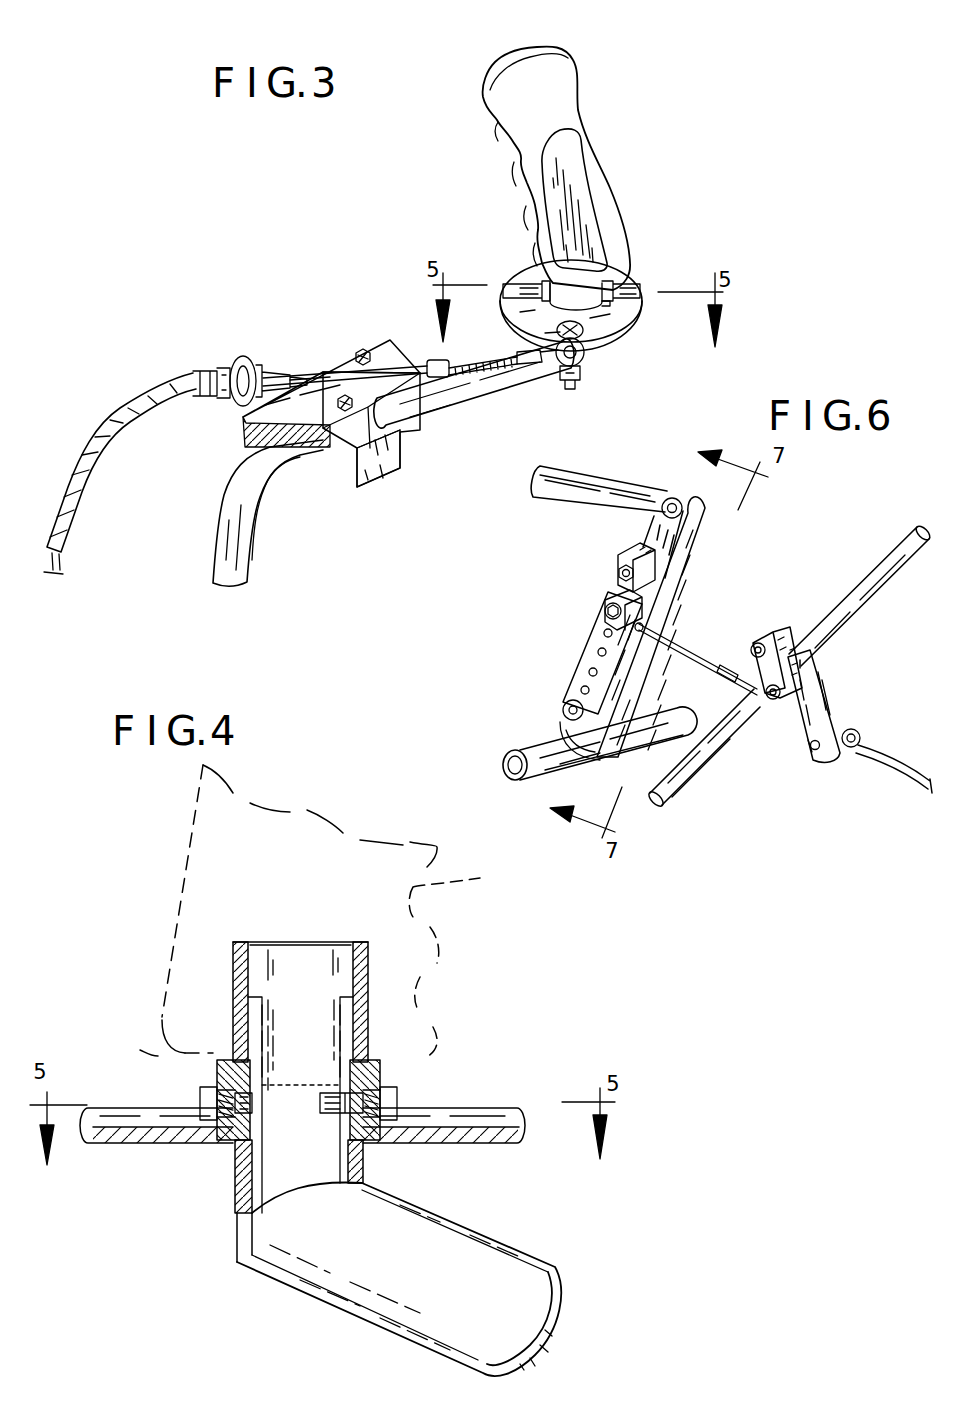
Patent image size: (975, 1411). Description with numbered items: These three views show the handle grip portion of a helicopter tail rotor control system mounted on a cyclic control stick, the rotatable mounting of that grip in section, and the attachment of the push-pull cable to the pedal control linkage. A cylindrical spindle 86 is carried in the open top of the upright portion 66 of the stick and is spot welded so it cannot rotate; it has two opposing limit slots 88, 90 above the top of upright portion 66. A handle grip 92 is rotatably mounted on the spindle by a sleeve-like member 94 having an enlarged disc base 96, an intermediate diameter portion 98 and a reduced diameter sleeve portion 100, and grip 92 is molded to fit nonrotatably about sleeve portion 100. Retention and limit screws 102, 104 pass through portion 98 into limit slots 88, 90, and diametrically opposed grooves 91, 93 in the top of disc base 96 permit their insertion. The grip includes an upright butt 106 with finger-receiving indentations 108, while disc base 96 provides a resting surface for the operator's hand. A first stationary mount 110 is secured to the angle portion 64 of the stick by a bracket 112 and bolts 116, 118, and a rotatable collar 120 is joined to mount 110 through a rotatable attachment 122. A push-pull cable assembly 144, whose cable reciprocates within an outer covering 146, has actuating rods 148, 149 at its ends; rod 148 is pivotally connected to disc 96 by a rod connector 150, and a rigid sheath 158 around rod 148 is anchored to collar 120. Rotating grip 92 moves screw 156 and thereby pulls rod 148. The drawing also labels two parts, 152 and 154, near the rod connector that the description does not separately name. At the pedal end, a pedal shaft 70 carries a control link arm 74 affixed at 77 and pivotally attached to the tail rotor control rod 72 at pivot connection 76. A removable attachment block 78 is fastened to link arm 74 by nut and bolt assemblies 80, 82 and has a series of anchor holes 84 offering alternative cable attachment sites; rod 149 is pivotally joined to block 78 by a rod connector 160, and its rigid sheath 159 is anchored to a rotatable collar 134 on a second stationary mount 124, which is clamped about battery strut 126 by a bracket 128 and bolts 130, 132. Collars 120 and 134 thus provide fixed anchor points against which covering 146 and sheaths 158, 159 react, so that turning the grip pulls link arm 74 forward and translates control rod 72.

In FIG. 3, the handle grip 92 is at (492, 60).
In FIG. 4, the handle grip 92 is at (333, 798).
In FIG. 3, the upright butt 106 is at (600, 175).
In FIG. 4, the upright butt 106 is at (277, 895).
In FIG. 3, the finger-receiving indentations 108 is at (537, 203).
In FIG. 4, the finger-receiving indentations 108 is at (422, 990).
In FIG. 3, the groove 91 is at (520, 285).
In FIG. 3, the sleeve-like member 94 is at (612, 286).
In FIG. 4, the sleeve-like member 94 is at (405, 1068).
In FIG. 3, the groove 93 is at (637, 293).
In FIG. 3, the disc base 96 is at (632, 328).
In FIG. 4, the disc base 96 is at (503, 1112).
In FIG. 3, the screw 156 is at (547, 328).
In FIG. 3, the rod connector 150 is at (586, 360).
In FIG. 3, the nut 154 is at (577, 384).
In FIG. 3, the angle portion 64 is at (448, 405).
In FIG. 4, the angle portion 64 is at (320, 1303).
In FIG. 3, the first stationary mount 110 is at (333, 363).
In FIG. 3, the rotatable attachment 122 is at (247, 440).
In FIG. 3, the bolt 116 is at (364, 347).
In FIG. 3, the bolt 118 is at (343, 413).
In FIG. 3, the bracket 112 is at (373, 473).
In FIG. 3, the actuating rod 148 is at (443, 404).
In FIG. 3, the rigid sheath 158 is at (412, 360).
In FIG. 3, the threaded rod 152 is at (503, 378).
In FIG. 3, the rotatable collar 120 is at (246, 355).
In FIG. 3, the outer covering 146 is at (142, 392).
In FIG. 6, the outer covering 146 is at (910, 772).
In FIG. 3, the push-pull cable assembly 144 is at (80, 408).
In FIG. 6, the tail rotor control rod 72 is at (592, 480).
In FIG. 6, the control link arm 74 is at (653, 523).
In FIG. 6, the pivot connection 76 is at (668, 498).
In FIG. 6, the removable attachment block 78 is at (590, 627).
In FIG. 6, the anchor holes 84 is at (597, 672).
In FIG. 6, the first nut and bolt assembly 80 is at (617, 571).
In FIG. 6, the rod connector 160 is at (600, 606).
In FIG. 6, the second nut and bolt assembly 82 is at (566, 700).
In FIG. 6, the attachment point 77 is at (568, 737).
In FIG. 6, the pedal shaft 70 is at (533, 747).
In FIG. 6, the actuating rod 149 is at (682, 630).
In FIG. 6, the rigid sheath 159 is at (733, 673).
In FIG. 6, the battery strut 126 is at (877, 587).
In FIG. 6, the bracket 128 is at (775, 630).
In FIG. 6, the second stationary mount 124 is at (823, 687).
In FIG. 6, the bolt 130 is at (754, 643).
In FIG. 6, the bolt 132 is at (780, 707).
In FIG. 6, the rotatable collar 134 is at (860, 730).
In FIG. 4, the reduced diameter sleeve portion 100 is at (367, 967).
In FIG. 4, the limit slot 90 is at (330, 1090).
In FIG. 4, the intermediate diameter portion 98 is at (217, 1073).
In FIG. 4, the retention and limit screw 102 is at (200, 1093).
In FIG. 4, the retention and limit screw 104 is at (397, 1100).
In FIG. 4, the limit slot 88 is at (237, 1162).
In FIG. 4, the cylindrical spindle 86 is at (362, 1152).
In FIG. 4, the upright portion 66 is at (237, 1223).